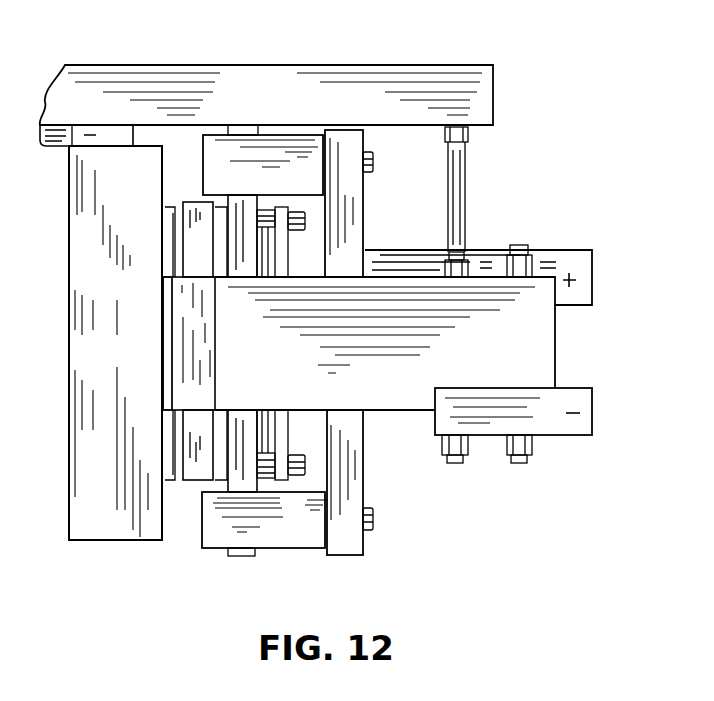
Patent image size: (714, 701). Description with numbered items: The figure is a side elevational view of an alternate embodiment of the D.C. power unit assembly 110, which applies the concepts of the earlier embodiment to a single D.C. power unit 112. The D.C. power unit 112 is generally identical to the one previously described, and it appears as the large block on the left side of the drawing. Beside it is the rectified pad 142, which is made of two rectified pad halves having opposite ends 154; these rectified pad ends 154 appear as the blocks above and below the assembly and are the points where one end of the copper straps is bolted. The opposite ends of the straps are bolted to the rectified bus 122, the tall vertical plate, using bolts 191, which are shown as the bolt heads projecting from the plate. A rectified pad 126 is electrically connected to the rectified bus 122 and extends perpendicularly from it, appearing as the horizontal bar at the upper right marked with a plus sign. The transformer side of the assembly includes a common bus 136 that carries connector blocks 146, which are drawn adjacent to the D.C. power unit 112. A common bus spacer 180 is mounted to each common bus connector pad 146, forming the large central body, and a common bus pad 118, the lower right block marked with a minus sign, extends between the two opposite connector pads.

The D.C. power unit assembly 110 is at (142, 560).
The D.C. power unit 112 is at (66, 425).
The common bus pad 118 is at (563, 432).
The rectified bus 122 is at (365, 437).
The rectified pad 126 is at (568, 253).
The common bus 136 is at (163, 337).
The rectified pad 142 is at (261, 481).
The connector blocks 146 is at (187, 307).
The rectified pad ends 154 is at (240, 132).
The common bus spacer 180 is at (548, 359).
The bolts 191 is at (372, 163).